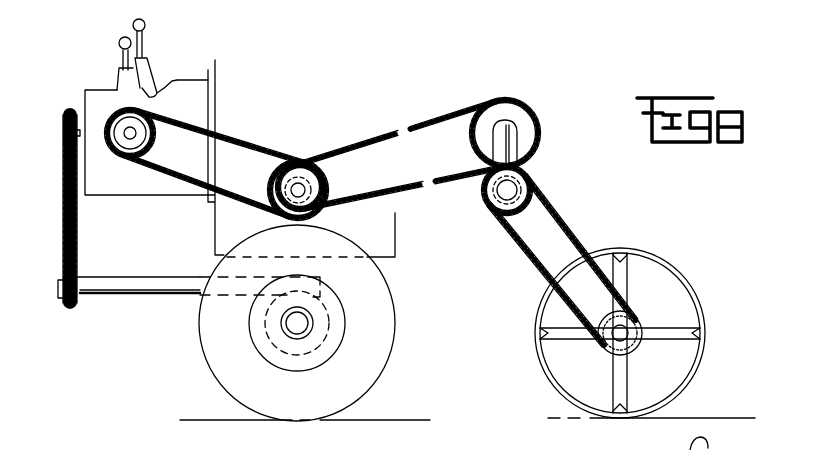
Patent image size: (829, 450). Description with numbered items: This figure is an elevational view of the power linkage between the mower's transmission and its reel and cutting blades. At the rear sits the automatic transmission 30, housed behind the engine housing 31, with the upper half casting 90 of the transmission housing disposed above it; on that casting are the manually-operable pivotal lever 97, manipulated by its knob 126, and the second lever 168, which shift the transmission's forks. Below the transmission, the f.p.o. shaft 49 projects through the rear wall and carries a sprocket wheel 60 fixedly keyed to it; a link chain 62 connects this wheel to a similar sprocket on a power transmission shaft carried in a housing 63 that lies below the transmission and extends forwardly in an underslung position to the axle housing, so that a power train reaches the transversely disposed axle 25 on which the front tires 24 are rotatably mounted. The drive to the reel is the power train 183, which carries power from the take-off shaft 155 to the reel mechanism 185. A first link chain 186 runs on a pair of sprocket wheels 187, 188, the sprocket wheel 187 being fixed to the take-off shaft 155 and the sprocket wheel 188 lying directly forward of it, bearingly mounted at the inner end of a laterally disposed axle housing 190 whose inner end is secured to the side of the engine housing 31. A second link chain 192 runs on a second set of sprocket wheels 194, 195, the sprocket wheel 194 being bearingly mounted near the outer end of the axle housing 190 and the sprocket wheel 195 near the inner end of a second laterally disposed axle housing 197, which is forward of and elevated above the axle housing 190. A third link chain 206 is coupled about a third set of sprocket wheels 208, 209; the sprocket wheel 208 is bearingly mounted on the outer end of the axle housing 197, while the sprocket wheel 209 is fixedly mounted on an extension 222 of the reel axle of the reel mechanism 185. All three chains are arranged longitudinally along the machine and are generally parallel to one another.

The tire 24 is at (282, 323).
The axle 25 is at (295, 330).
The automatic transmission 30 is at (145, 222).
The engine housing 31 is at (383, 243).
The f.p.o. shaft 49 is at (62, 133).
The sprocket wheel 60 is at (62, 140).
The link chain 62 is at (64, 186).
The housing 63 is at (123, 278).
The upper half casting 90 is at (147, 74).
The manually-operable pivotal lever 97 is at (131, 45).
The knob 126 is at (146, 26).
The second lever 168 is at (121, 60).
The take-off shaft 155 is at (150, 140).
The power train 183 is at (403, 144).
The reel mechanism 185 is at (635, 318).
The first link chain 186 is at (263, 141).
The sprocket wheel 187 is at (215, 162).
The sprocket wheel 188 is at (271, 157).
The axle housing 190 is at (283, 179).
The second link chain 192 is at (383, 146).
The sprocket wheel 194 is at (301, 183).
The sprocket wheel 195 is at (535, 142).
The second axle housing 197 is at (503, 143).
The third link chain 206 is at (537, 260).
The sprocket wheel 208 is at (530, 193).
The sprocket wheel 209 is at (608, 342).
The reel axle extension 222 is at (627, 323).